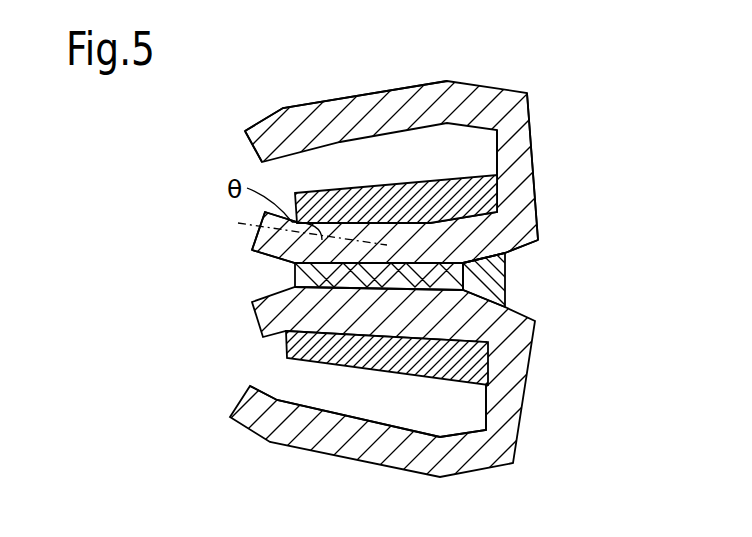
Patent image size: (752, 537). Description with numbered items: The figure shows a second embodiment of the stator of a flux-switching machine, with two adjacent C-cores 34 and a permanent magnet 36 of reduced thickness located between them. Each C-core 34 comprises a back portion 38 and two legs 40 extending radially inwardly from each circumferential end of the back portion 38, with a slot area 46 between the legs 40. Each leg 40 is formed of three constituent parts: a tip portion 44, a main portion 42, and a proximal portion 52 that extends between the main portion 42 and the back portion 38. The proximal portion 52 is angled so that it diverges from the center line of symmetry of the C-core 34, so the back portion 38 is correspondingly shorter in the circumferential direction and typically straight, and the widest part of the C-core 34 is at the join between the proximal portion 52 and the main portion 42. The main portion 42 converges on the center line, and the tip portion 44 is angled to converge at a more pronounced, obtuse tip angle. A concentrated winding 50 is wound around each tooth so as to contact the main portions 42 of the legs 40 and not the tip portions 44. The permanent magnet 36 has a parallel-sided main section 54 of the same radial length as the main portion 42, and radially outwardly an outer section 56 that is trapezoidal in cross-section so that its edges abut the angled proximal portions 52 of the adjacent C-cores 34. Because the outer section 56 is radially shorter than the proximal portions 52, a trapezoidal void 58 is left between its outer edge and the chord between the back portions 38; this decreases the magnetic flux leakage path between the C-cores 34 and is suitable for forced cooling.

The C-core 34 is at (343, 437).
The permanent magnet 36 is at (537, 208).
The back portion 38 is at (517, 157).
The leg 40 is at (332, 110).
The main portion 42 is at (393, 107).
The tip portion 44 is at (267, 137).
The slot area 46 is at (451, 417).
The concentrated winding 50 is at (460, 362).
The proximal portion 52 is at (487, 103).
The main section 54 is at (327, 275).
The outer section 56 is at (502, 283).
The trapezoidal void 58 is at (545, 268).